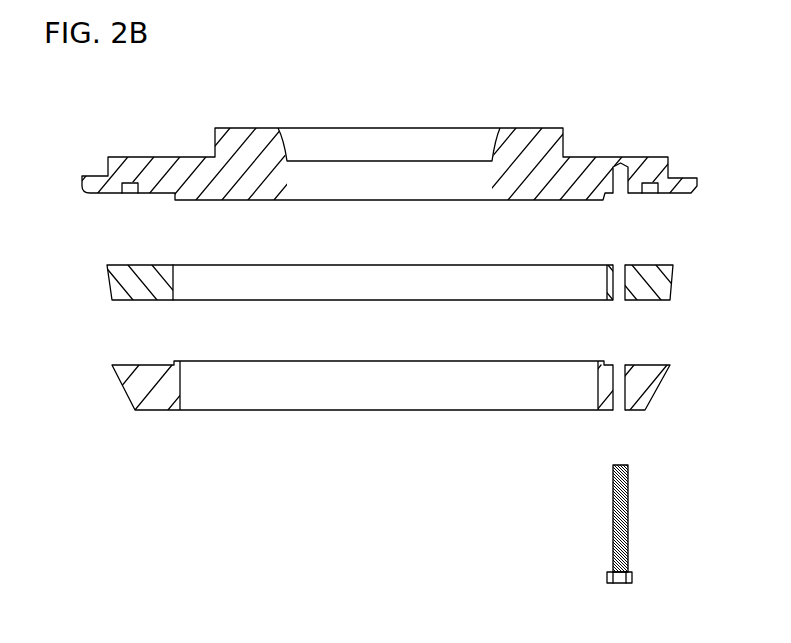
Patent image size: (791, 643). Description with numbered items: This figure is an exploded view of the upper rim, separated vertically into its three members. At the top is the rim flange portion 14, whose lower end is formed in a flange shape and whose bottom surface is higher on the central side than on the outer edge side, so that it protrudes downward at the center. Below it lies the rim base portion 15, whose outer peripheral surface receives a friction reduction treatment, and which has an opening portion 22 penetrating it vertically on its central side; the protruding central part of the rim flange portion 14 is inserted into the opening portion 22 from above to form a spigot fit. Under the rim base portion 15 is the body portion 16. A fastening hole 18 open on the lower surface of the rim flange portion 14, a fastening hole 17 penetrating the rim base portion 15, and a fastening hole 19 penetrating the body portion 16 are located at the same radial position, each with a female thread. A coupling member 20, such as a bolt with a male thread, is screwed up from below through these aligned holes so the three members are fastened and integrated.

The rim flange portion 14 is at (681, 180).
The rim base portion 15 is at (672, 280).
The body portion 16 is at (637, 390).
The fastening hole 17 is at (631, 287).
The fastening hole 18 is at (616, 195).
The fastening hole 19 is at (627, 396).
The coupling member 20 is at (620, 583).
The opening portion 22 is at (176, 287).